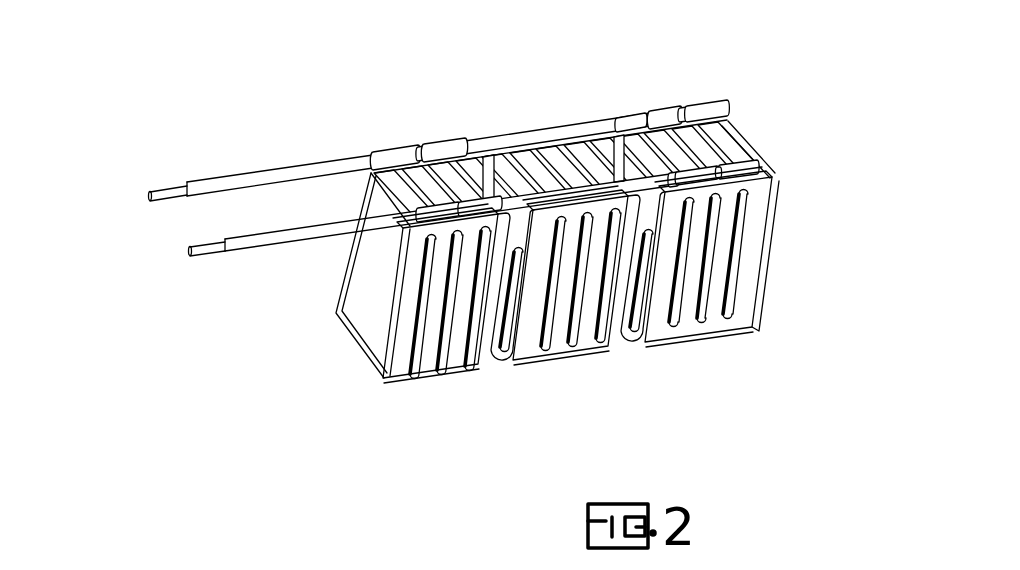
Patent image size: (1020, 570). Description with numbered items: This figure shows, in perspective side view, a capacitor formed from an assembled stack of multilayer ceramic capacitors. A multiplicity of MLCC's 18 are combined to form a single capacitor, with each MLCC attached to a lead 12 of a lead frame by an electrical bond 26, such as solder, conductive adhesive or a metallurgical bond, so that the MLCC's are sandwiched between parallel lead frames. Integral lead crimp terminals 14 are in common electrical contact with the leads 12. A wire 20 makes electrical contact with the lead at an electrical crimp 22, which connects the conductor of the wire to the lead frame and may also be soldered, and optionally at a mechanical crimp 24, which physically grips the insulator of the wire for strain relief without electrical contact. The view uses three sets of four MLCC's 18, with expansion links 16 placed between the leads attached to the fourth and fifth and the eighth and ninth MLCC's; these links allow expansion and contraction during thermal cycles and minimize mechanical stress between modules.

The lead 12 is at (450, 365).
The lead crimp terminal 14 is at (447, 147).
The expansion link 16 is at (505, 362).
The MLCC 18 is at (680, 153).
The wire 20 is at (240, 242).
The electrical crimp 22 is at (750, 170).
The mechanical crimp 24 is at (390, 148).
The electrical bond 26 is at (334, 300).